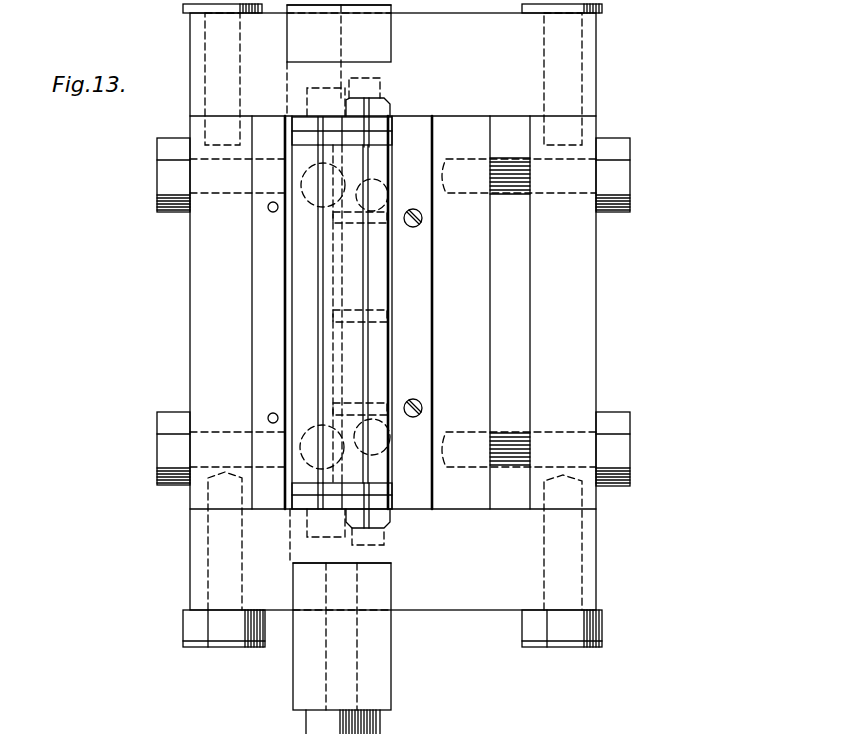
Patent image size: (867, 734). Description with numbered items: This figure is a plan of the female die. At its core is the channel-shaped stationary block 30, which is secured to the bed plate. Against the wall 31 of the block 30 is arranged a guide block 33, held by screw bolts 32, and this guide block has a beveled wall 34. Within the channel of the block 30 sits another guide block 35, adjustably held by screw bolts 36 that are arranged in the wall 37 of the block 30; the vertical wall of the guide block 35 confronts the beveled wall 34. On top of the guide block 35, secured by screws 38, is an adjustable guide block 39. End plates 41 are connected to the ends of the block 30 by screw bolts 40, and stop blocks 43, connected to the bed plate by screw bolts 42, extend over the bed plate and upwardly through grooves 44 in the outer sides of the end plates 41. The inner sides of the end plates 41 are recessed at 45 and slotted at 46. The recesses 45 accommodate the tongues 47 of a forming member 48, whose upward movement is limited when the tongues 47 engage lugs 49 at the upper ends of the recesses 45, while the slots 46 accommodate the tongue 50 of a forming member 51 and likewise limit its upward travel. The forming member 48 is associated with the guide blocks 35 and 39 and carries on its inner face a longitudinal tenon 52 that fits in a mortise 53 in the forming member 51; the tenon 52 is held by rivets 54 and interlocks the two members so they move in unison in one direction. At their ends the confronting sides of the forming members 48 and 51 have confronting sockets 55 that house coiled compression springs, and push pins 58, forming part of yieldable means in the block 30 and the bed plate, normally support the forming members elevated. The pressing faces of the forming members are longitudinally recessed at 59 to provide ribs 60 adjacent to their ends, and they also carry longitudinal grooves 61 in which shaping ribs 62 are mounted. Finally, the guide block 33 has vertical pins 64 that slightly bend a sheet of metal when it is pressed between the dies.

The stationary block 30 is at (515, 370).
The wall 31 is at (325, 305).
The screw bolts 32 is at (168, 212).
The guide block 33 is at (258, 365).
The beveled wall 34 is at (284, 384).
The guide block 35 is at (465, 258).
The screw bolts 36 is at (632, 187).
The wall 37 is at (585, 313).
The screws 38 is at (423, 405).
The adjustable guide block 39 is at (420, 341).
The screw bolts 40 is at (605, 10).
The end plates 41 is at (570, 68).
The screw bolts 42 is at (304, 728).
The stop blocks 43 is at (408, 657).
The grooves 44 is at (393, 38).
The recesses 45 is at (385, 82).
The slots 46 is at (287, 77).
The tongues 47 is at (380, 90).
The forming member 48 is at (398, 278).
The lugs 49 is at (392, 110).
The tongue 50 is at (307, 100).
The forming member 51 is at (303, 338).
The longitudinal tenon 52 is at (400, 245).
The mortise 53 is at (337, 273).
The rivets 54 is at (400, 303).
The sockets 55 is at (275, 225).
The push pins 58 is at (303, 447).
The longitudinal recesses 59 is at (382, 373).
The ribs 60 is at (400, 505).
The longitudinal grooves 61 is at (380, 198).
The shaping ribs 62 is at (337, 265).
The vertical pins 64 is at (270, 209).